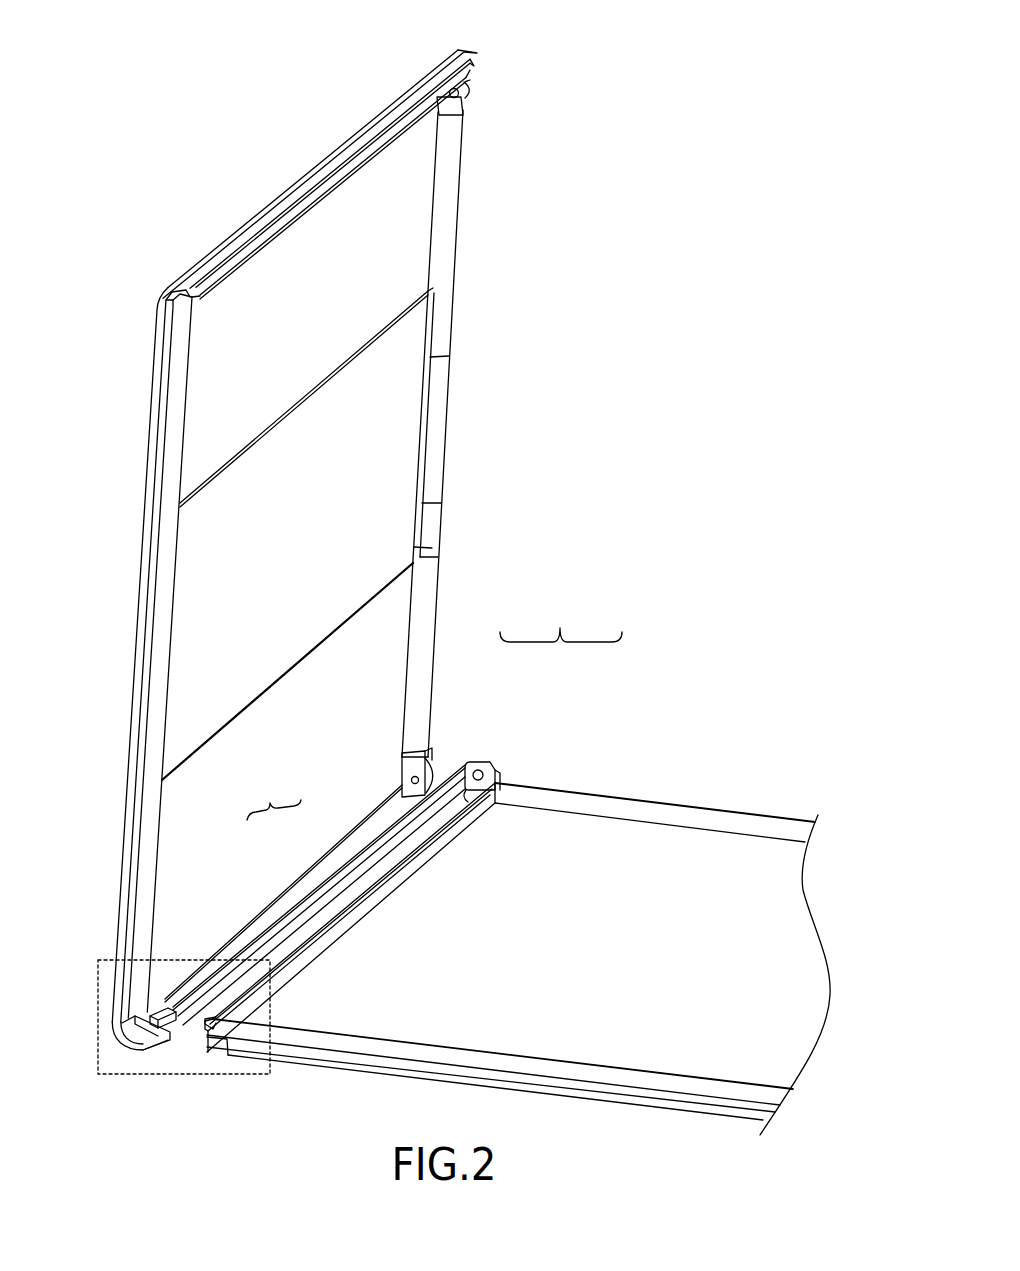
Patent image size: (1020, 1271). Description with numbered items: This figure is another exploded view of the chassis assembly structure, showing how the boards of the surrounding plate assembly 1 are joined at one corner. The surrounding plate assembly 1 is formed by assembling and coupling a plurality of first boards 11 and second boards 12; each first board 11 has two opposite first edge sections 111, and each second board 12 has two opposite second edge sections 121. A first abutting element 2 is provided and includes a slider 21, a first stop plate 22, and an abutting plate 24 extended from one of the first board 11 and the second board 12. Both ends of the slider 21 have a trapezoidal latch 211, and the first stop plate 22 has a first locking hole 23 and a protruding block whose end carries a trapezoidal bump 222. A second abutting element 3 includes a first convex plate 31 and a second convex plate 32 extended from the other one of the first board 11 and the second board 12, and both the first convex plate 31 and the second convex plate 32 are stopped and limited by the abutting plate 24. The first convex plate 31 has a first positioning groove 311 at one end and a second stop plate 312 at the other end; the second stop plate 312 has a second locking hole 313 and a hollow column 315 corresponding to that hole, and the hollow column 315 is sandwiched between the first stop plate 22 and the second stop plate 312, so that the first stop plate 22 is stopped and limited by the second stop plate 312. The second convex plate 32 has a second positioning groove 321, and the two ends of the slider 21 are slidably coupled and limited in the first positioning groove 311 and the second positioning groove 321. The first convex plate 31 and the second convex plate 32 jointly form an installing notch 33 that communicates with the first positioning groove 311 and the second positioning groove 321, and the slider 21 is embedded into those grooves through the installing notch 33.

The surrounding plate assembly 1 is at (561, 618).
The first board 11 is at (635, 842).
The first edge section 111 is at (368, 917).
The second board 12 is at (400, 622).
The second edge section 121 is at (337, 838).
The first abutting element 2 is at (490, 744).
The slider 21 is at (204, 1034).
The trapezoidal latch 211 is at (210, 1019).
The first stop plate 22 is at (482, 760).
The trapezoidal bump 222 is at (458, 788).
The first locking hole 23 is at (471, 760).
The abutting plate 24 is at (383, 887).
The second abutting element 3 is at (274, 802).
The first convex plate 31 is at (319, 844).
The first positioning groove 311 is at (124, 1028).
The second stop plate 312 is at (402, 760).
The second locking hole 313 is at (405, 783).
The hollow column 315 is at (420, 750).
The second convex plate 32 is at (325, 893).
The second positioning groove 321 is at (133, 1050).
The installing notch 33 is at (180, 1026).